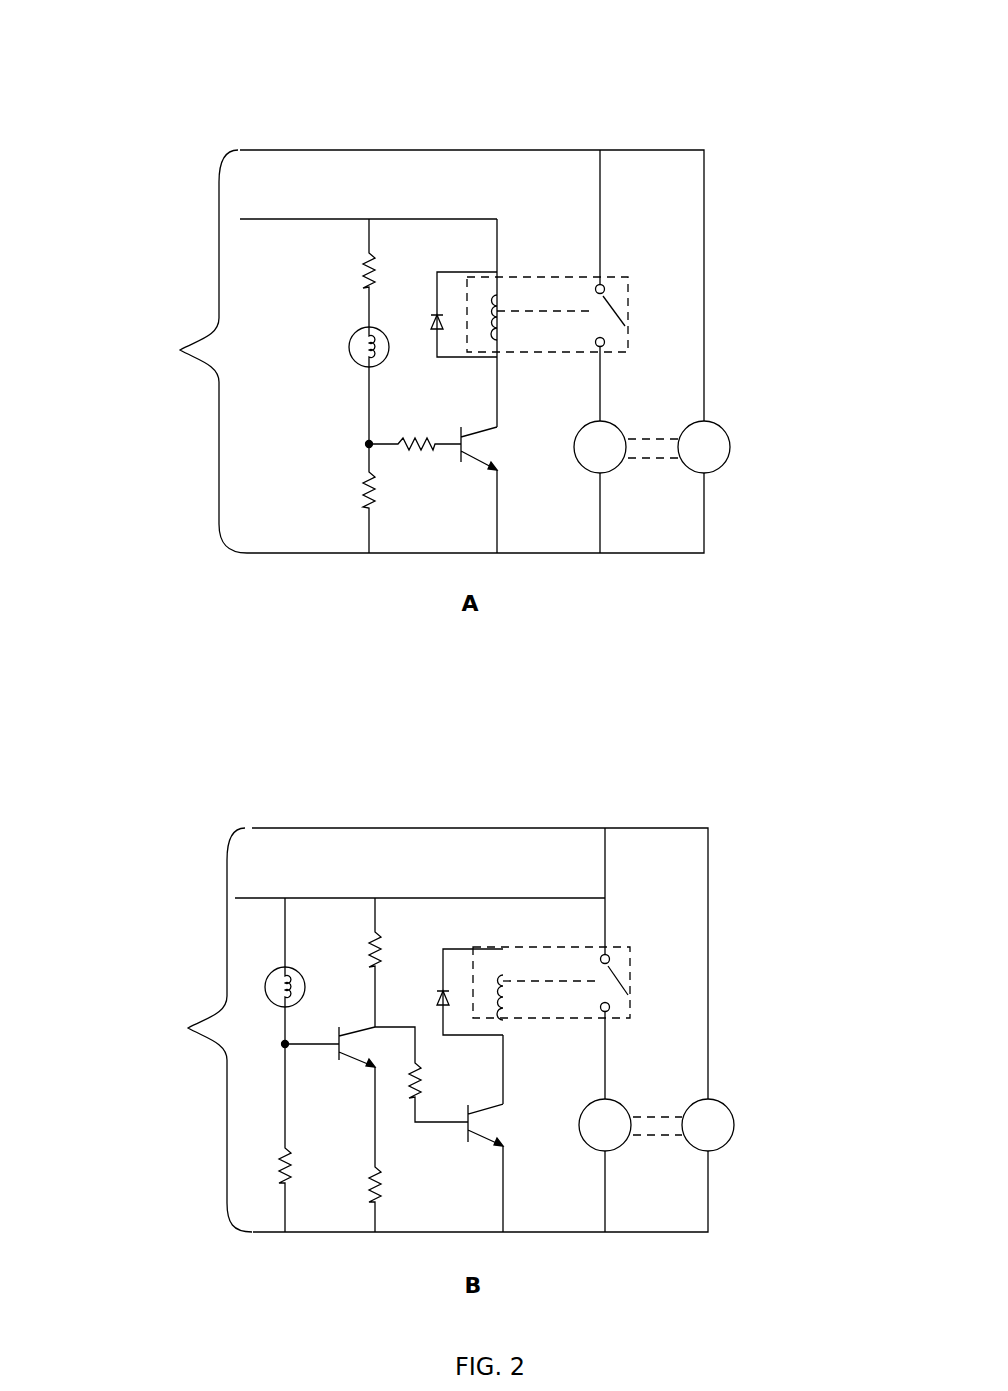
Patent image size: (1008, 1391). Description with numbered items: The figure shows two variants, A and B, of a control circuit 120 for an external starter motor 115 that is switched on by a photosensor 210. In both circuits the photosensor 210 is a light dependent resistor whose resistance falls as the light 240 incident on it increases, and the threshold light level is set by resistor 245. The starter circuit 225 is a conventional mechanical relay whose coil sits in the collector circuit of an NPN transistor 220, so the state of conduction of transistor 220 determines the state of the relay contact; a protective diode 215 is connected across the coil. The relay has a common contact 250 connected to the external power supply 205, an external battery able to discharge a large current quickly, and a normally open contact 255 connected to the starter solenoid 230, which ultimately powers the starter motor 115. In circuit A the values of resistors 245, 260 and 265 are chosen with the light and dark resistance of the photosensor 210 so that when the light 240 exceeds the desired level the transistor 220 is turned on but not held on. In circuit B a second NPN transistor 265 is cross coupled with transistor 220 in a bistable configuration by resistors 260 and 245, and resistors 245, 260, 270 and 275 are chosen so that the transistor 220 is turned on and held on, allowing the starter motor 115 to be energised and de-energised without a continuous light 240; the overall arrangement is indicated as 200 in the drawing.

The control circuit 200 is at (323, 88).
The external power supply 205 is at (183, 333).
The circuit 120 is at (622, 138).
The external starter motor 115 is at (717, 450).
The photosensor 210 is at (350, 330).
The protective diode 215 is at (435, 328).
The NPN transistor 220 is at (486, 443).
The starter circuit 225 is at (542, 288).
The starter solenoid 230 is at (593, 455).
The light level 240 is at (339, 386).
The resistor 245 is at (362, 485).
The common contact 250 is at (497, 218).
The normally open contact 255 is at (618, 303).
The resistor 260 is at (365, 255).
The resistor / NPN transistor 265 is at (415, 455).
The resistor 270 is at (422, 1085).
The resistor 275 is at (383, 1183).